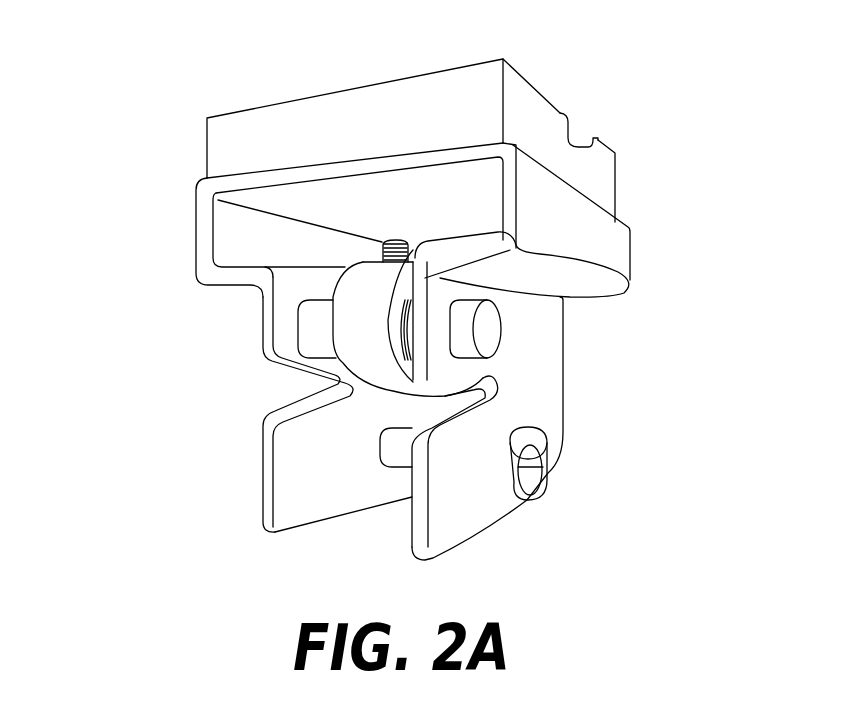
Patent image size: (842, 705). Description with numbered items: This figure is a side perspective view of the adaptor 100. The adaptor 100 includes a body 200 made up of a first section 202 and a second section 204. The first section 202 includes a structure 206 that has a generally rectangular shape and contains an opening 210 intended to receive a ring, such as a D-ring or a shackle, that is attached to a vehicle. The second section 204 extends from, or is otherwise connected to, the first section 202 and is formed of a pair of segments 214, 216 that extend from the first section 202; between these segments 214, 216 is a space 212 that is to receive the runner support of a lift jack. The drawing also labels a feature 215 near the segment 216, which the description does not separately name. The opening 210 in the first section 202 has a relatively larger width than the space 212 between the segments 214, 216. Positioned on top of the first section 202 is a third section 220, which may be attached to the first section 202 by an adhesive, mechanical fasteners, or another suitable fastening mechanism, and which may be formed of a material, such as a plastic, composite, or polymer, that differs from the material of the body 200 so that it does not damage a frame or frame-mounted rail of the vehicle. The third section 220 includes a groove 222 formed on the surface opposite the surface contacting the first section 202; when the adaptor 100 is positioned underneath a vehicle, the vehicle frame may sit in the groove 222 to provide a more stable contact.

The adaptor 100 is at (176, 82).
The body 200 is at (262, 343).
The first section 202 is at (184, 217).
The second section 204 is at (218, 433).
The structure 206 is at (630, 247).
The opening 210 is at (496, 226).
The space 212 is at (389, 487).
The segment 214 is at (265, 517).
The ring inner opening 215 is at (542, 448).
The segment 216 is at (557, 443).
The third section 220 is at (358, 88).
The groove 222 is at (583, 140).